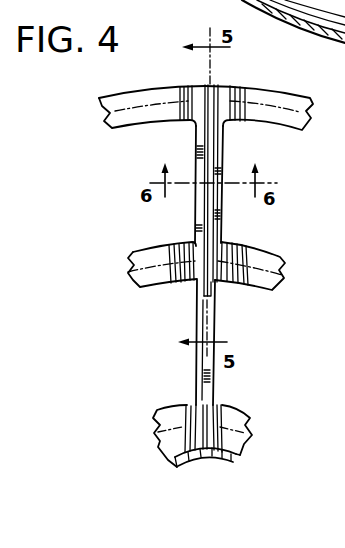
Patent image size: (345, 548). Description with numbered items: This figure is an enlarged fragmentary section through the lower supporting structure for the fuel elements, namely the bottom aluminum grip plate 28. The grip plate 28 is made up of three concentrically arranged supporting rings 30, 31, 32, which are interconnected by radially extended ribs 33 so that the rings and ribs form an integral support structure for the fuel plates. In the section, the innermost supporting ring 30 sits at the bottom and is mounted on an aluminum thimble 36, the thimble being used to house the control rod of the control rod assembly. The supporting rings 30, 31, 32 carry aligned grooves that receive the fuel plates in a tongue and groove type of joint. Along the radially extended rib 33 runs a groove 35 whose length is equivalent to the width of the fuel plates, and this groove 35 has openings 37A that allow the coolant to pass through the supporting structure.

The bottom aluminum grip plate 28 is at (168, 306).
The innermost supporting ring 30 is at (156, 424).
The supporting ring 31 is at (152, 257).
The supporting ring 32 is at (142, 112).
The radially extended rib 33 is at (207, 387).
The groove 35 is at (212, 98).
The aluminum thimble 36 is at (188, 466).
The opening 37A is at (209, 160).